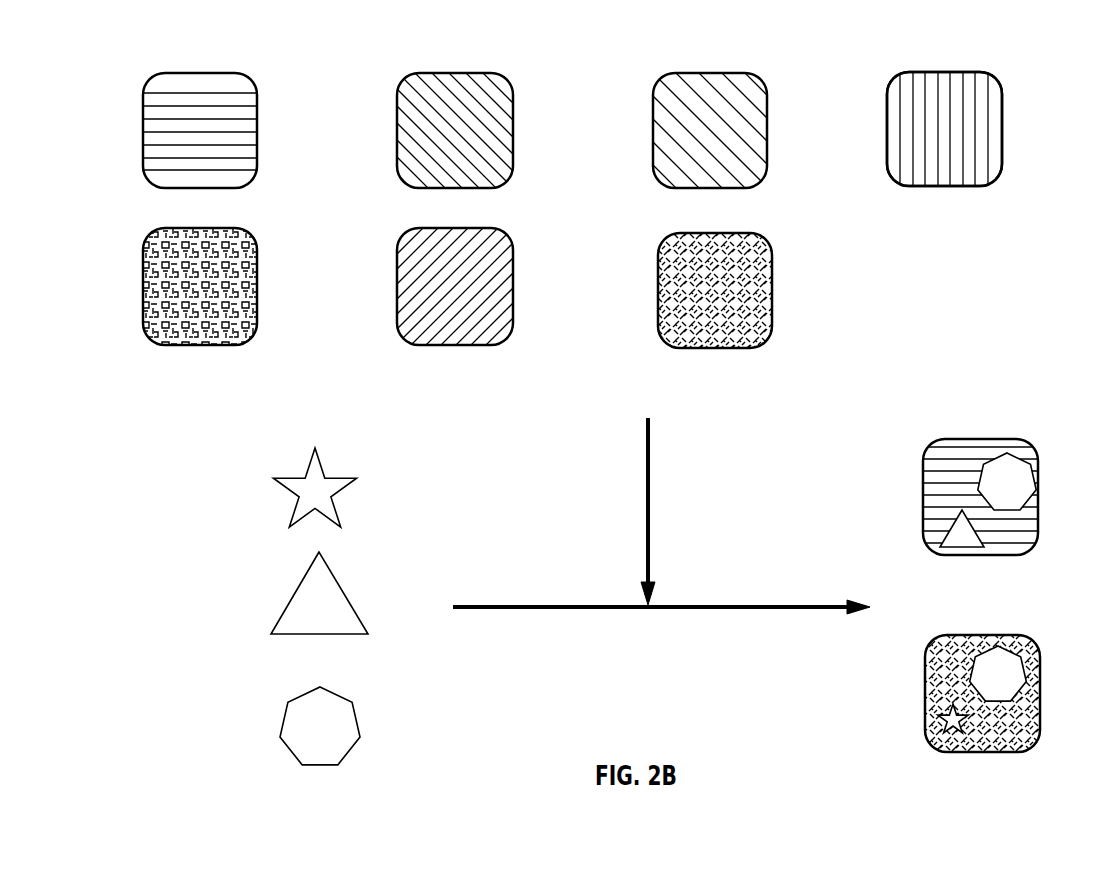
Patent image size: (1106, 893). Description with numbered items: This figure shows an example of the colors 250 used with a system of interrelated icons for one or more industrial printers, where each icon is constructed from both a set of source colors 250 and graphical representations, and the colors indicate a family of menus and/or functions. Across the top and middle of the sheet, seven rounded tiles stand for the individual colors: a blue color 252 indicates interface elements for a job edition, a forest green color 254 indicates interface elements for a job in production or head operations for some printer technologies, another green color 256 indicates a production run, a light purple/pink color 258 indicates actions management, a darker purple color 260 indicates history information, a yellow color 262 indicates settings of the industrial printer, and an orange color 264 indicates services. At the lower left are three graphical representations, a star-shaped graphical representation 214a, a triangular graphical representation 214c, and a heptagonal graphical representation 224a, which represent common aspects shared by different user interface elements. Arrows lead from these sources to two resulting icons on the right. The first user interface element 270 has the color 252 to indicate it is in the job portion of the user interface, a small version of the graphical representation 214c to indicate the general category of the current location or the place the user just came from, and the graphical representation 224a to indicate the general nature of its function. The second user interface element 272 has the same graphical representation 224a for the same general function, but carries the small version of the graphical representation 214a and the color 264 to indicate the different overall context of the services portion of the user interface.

The colors 250 is at (1031, 87).
The blue color 252 is at (142, 172).
The forest green color 254 is at (402, 180).
The green color 256 is at (655, 180).
The light purple/pink color 258 is at (892, 178).
The darker purple color 260 is at (152, 342).
The yellow color 262 is at (407, 342).
The orange color 264 is at (662, 335).
The graphical representation 214a is at (297, 498).
The graphical representation 214c is at (287, 610).
The graphical representation 224a is at (282, 745).
The first user interface element 270 is at (947, 477).
The second user interface element 272 is at (937, 682).